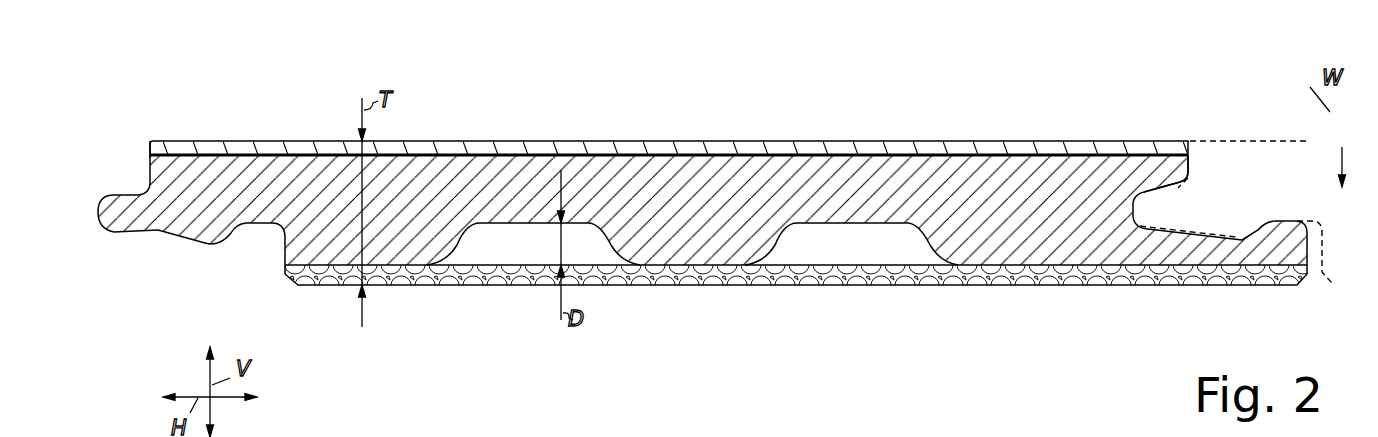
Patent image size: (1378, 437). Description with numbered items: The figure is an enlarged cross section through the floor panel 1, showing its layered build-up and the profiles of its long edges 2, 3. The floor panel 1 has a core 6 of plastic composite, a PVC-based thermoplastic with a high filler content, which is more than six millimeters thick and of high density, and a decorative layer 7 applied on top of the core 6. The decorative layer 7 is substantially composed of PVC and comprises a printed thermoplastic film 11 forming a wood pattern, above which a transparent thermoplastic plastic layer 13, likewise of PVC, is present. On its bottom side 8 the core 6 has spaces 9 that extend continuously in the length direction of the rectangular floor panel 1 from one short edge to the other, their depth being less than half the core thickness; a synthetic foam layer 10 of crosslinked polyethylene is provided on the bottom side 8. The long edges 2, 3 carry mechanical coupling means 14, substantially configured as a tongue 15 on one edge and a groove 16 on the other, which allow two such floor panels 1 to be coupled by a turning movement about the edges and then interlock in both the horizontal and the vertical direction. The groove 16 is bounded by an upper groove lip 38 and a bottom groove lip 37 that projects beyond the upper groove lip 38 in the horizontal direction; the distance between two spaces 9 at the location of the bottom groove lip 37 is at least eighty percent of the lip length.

The floor panel 1 is at (792, 135).
The long edge 2 is at (1227, 195).
The long edge 3 is at (157, 278).
The core 6 is at (690, 228).
The decorative layer 7 is at (140, 158).
The bottom side 8 is at (1020, 275).
The spaces 9 is at (537, 242).
The synthetic foam layer 10 is at (880, 275).
The printed thermoplastic film 11 is at (573, 156).
The transparent thermoplastic plastic layer 13 is at (688, 153).
The mechanical coupling means 14 is at (189, 280).
The tongue 15 is at (168, 223).
The groove 16 is at (1137, 223).
The bottom groove lip 37 is at (1180, 250).
The upper groove lip 38 is at (1138, 170).